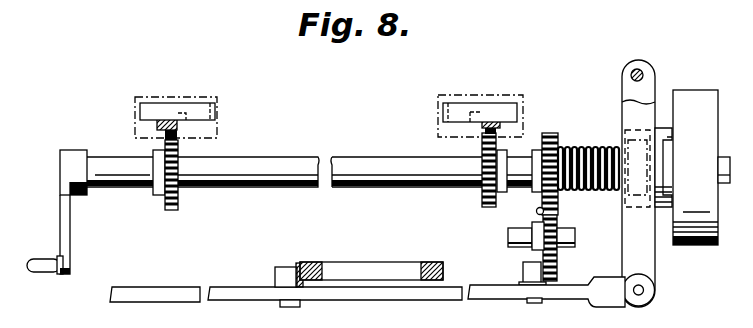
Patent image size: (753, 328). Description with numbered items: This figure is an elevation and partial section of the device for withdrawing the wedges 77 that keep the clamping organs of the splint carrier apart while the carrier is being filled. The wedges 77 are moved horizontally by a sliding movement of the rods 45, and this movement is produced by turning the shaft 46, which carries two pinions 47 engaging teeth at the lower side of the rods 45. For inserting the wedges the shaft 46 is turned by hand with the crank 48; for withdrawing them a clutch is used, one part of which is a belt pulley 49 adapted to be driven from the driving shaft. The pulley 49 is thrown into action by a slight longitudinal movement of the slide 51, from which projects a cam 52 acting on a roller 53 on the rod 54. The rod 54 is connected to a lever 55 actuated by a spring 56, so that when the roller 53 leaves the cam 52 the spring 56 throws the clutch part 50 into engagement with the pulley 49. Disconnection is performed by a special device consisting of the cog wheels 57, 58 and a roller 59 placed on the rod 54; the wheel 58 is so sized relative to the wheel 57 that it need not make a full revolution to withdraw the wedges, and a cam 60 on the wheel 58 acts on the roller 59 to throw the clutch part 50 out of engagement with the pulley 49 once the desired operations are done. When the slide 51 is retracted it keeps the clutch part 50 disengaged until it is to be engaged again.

The rods 45 is at (157, 122).
The shaft 46 is at (268, 157).
The pinions 47 is at (164, 204).
The crank 48 is at (70, 238).
The belt pulley 49 is at (700, 246).
The clutch part 50 is at (657, 130).
The slide 51 is at (313, 262).
The cam 52 is at (297, 266).
The roller 53 is at (275, 275).
The rod 54 is at (338, 300).
The lever 55 is at (623, 234).
The spring 56 is at (596, 147).
The cog wheel 57 is at (548, 133).
The cog wheel 58 is at (557, 258).
The roller 59 is at (523, 266).
The cam 60 is at (537, 211).
The wedges 77 is at (170, 103).